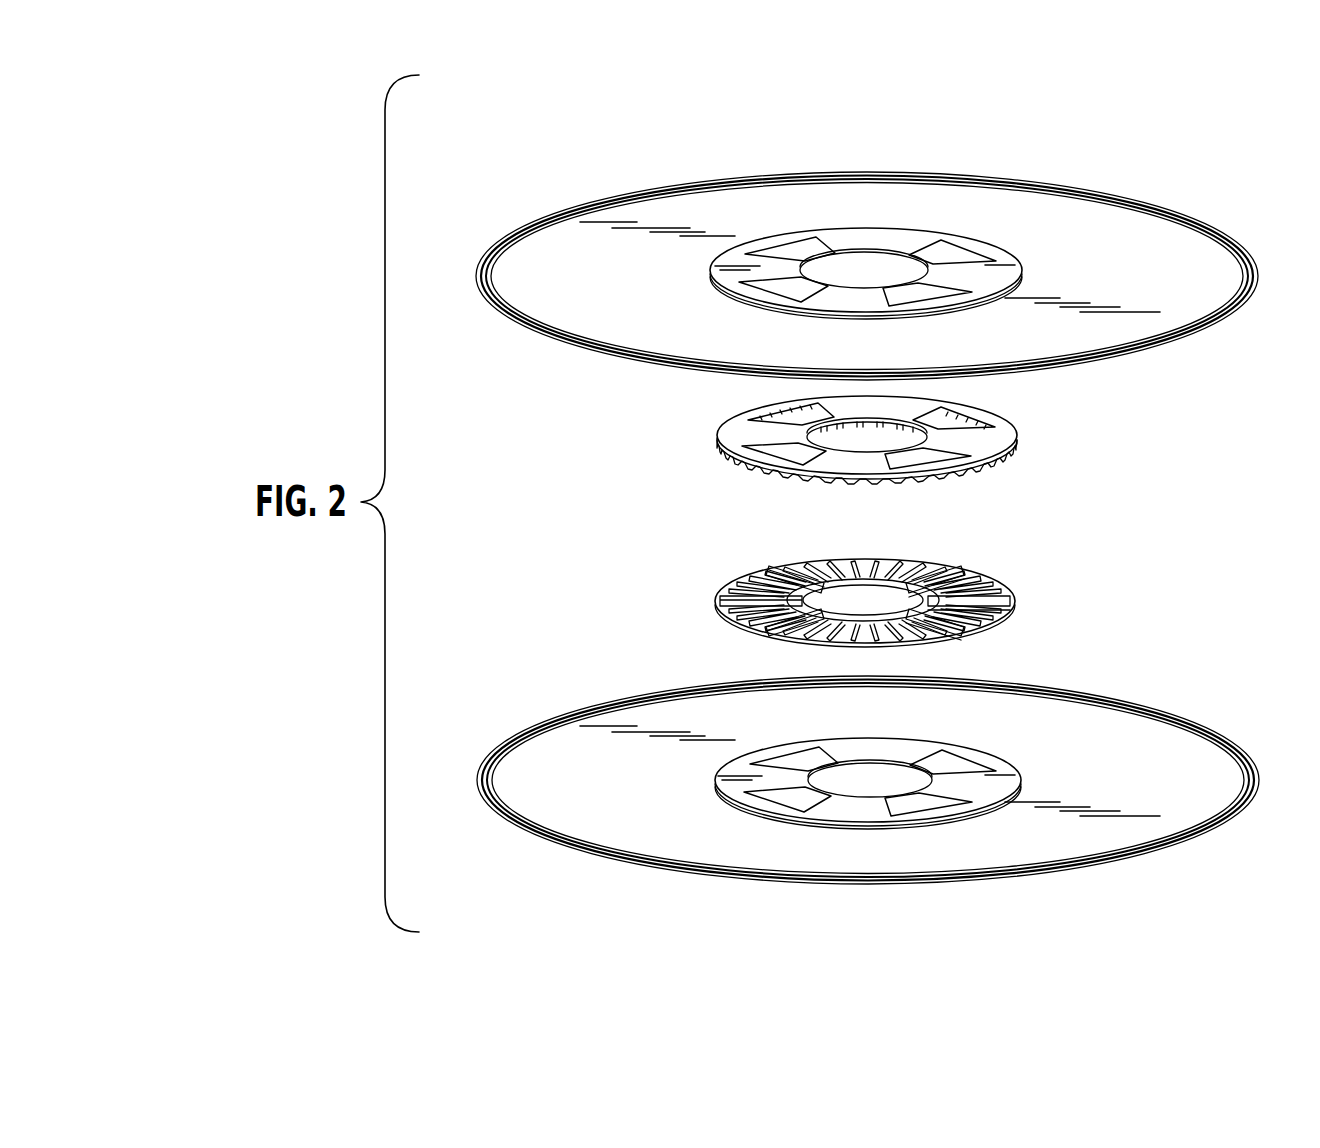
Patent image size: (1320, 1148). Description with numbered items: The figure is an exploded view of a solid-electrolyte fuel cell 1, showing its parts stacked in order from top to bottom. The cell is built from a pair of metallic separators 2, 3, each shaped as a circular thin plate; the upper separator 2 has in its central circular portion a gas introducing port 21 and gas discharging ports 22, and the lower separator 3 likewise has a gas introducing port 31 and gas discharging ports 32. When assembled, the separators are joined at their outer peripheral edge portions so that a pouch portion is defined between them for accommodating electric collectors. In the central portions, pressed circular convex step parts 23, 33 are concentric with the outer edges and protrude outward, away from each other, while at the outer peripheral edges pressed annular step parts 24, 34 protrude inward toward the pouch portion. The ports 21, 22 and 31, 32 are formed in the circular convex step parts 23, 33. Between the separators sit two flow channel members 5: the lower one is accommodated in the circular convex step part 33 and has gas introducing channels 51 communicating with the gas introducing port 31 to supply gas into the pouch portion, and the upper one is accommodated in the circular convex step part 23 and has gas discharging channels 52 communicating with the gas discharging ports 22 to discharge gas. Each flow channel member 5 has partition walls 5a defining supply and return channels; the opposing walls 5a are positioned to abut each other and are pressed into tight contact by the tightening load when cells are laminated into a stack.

The solid-electrolyte fuel cell 1 is at (1230, 158).
The separator 2 is at (1149, 202).
The gas introducing port 21 is at (875, 262).
The gas discharging ports 22 is at (800, 242).
The circular convex step part 23 is at (1005, 262).
The annular step part 24 is at (1242, 260).
The separator 3 is at (1173, 710).
The gas introducing port 31 is at (868, 790).
The gas discharging ports 32 is at (778, 800).
The circular convex step part 33 is at (1000, 770).
The annular step part 34 is at (1248, 770).
The flow channel member 5 is at (1025, 442).
The partition walls 5a is at (980, 470).
The gas introducing channels 51 is at (840, 602).
The gas discharging channels 52 is at (952, 423).